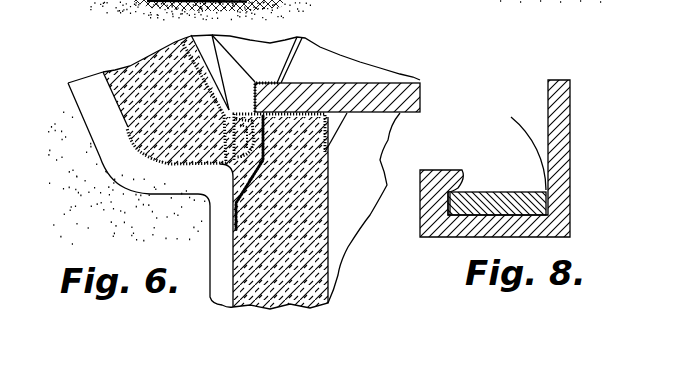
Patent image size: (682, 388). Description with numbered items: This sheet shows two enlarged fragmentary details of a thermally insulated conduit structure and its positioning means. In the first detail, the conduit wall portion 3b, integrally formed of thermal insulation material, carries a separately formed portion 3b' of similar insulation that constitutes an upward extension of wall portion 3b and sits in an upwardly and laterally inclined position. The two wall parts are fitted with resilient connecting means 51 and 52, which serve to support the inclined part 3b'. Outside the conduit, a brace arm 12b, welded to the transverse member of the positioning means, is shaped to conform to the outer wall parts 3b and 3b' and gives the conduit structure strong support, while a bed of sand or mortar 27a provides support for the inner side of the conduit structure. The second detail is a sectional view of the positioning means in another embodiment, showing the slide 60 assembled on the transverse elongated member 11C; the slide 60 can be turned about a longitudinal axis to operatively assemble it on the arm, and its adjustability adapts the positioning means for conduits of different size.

In FIG. 6, the upward extension wall portion 3b' is at (153, 100).
In FIG. 6, the brace arm 12b is at (103, 128).
In FIG. 6, the resilient connecting means 52 is at (245, 112).
In FIG. 6, the resilient connecting means 51 is at (262, 163).
In FIG. 6, the wall portion 3b is at (288, 213).
In FIG. 6, the bed of sand or mortar 27a is at (345, 11).
In FIG. 8, the slide 60 is at (500, 192).
In FIG. 8, the transverse elongated member 11C is at (570, 167).